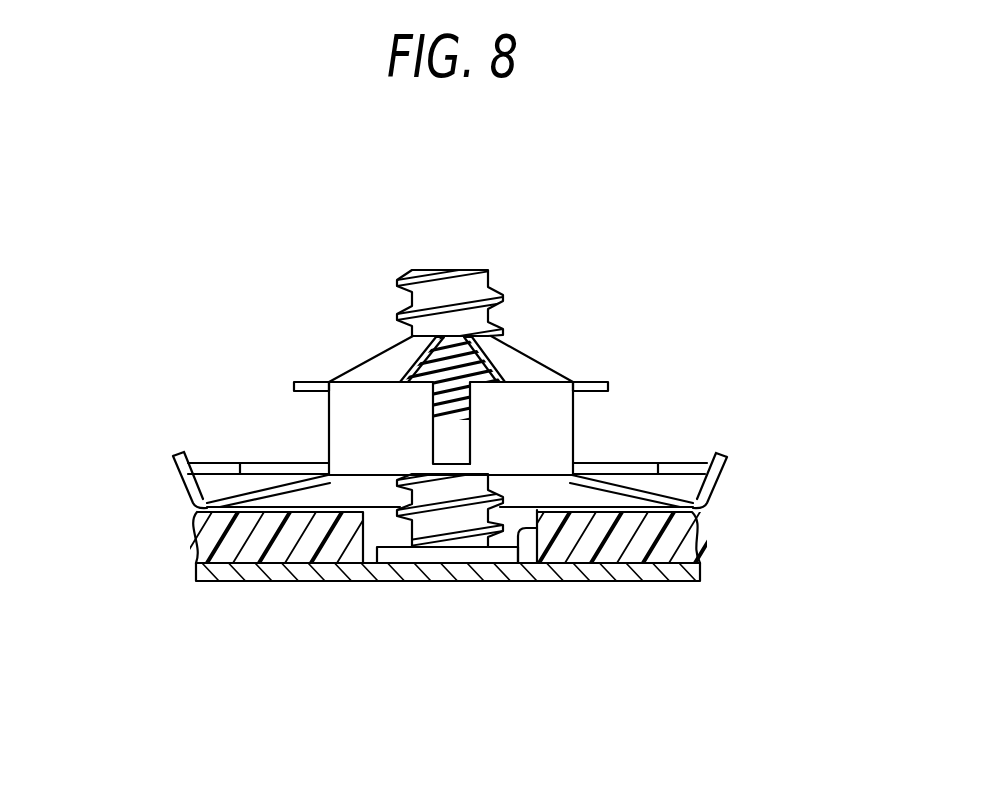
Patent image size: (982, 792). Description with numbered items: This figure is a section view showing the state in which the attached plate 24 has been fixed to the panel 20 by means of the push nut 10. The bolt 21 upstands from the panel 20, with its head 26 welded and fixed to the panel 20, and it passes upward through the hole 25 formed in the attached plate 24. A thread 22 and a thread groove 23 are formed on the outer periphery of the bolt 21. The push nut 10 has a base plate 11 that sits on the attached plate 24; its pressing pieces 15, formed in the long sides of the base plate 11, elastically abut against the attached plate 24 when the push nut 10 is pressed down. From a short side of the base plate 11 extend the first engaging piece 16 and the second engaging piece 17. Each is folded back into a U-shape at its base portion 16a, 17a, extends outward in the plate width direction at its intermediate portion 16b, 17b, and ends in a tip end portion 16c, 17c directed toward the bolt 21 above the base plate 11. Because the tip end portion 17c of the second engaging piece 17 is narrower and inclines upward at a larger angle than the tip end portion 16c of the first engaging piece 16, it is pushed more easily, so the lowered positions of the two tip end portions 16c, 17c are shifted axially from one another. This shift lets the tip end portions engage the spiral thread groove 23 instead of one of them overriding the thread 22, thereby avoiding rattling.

The push nut 10 is at (778, 338).
The base plate 11 is at (684, 462).
The pressing piece 15 is at (176, 488).
The first engaging piece 16 is at (350, 404).
The base portion of first engaging piece 16a is at (348, 429).
The intermediate portion of first engaging piece 16b is at (304, 380).
The tip end portion of first engaging piece 16c is at (383, 355).
The second engaging piece 17 is at (578, 417).
The base portion of second engaging piece 17a is at (562, 448).
The intermediate portion of second engaging piece 17b is at (594, 381).
The tip end portion of second engaging piece 17c is at (528, 352).
The panel 20 is at (609, 582).
The bolt 21 is at (465, 260).
The thread 22 is at (498, 300).
The thread groove 23 is at (492, 320).
The attached plate 24 is at (692, 540).
The hole 25 is at (513, 562).
The head 26 is at (423, 550).